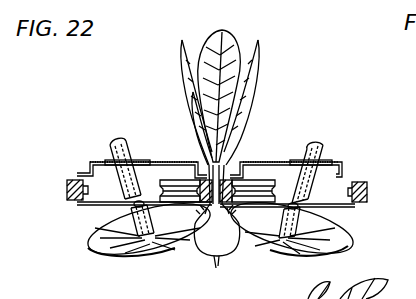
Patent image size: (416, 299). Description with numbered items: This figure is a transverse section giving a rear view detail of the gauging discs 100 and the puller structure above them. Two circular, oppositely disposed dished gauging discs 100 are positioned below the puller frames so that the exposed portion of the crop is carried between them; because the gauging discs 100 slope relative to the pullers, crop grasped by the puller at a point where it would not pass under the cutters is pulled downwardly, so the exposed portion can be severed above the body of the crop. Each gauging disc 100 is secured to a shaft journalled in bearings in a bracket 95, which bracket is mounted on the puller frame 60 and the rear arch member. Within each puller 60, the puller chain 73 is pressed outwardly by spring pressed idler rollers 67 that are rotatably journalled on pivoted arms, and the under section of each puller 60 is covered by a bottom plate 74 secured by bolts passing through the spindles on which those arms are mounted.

The puller 60 is at (88, 165).
The spring pressed idler roller 67 is at (184, 186).
The puller chain 73 is at (234, 160).
The bottom plate 74 is at (86, 204).
The bracket 95 is at (117, 146).
The gauging disc 100 is at (96, 246).